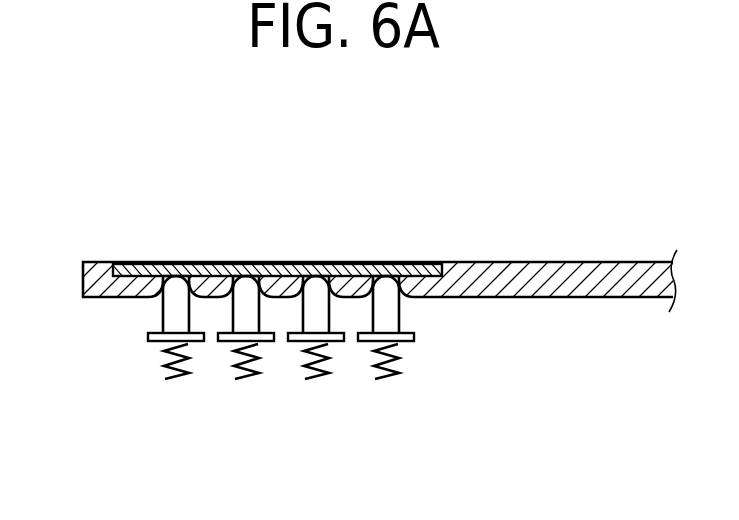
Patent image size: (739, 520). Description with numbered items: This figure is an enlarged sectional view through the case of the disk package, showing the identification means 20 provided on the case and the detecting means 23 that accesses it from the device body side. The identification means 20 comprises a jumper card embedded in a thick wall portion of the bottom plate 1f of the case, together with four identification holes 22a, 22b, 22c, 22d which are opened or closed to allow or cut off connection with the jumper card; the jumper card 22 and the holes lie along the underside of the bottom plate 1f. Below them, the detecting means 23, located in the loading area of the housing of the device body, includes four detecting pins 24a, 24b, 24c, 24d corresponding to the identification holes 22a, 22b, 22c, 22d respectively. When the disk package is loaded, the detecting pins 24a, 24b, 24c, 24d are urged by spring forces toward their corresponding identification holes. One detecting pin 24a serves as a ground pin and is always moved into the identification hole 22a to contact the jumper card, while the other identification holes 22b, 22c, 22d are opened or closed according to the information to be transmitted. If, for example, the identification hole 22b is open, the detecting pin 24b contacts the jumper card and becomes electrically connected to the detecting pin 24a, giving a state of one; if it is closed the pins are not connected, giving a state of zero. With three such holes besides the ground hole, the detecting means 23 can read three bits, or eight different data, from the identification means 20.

The bottom plate 1f is at (538, 283).
The identification means 20 is at (266, 317).
The contact plate 22 is at (285, 267).
The identification hole 22a is at (392, 263).
The identification hole 22b is at (320, 267).
The identification hole 22c is at (245, 267).
The identification hole 22d is at (178, 267).
The detecting means 23 is at (310, 384).
The detecting pin 24a is at (435, 327).
The detecting pin 24b is at (327, 317).
The detecting pin 24c is at (250, 323).
The detecting pin 24d is at (163, 317).